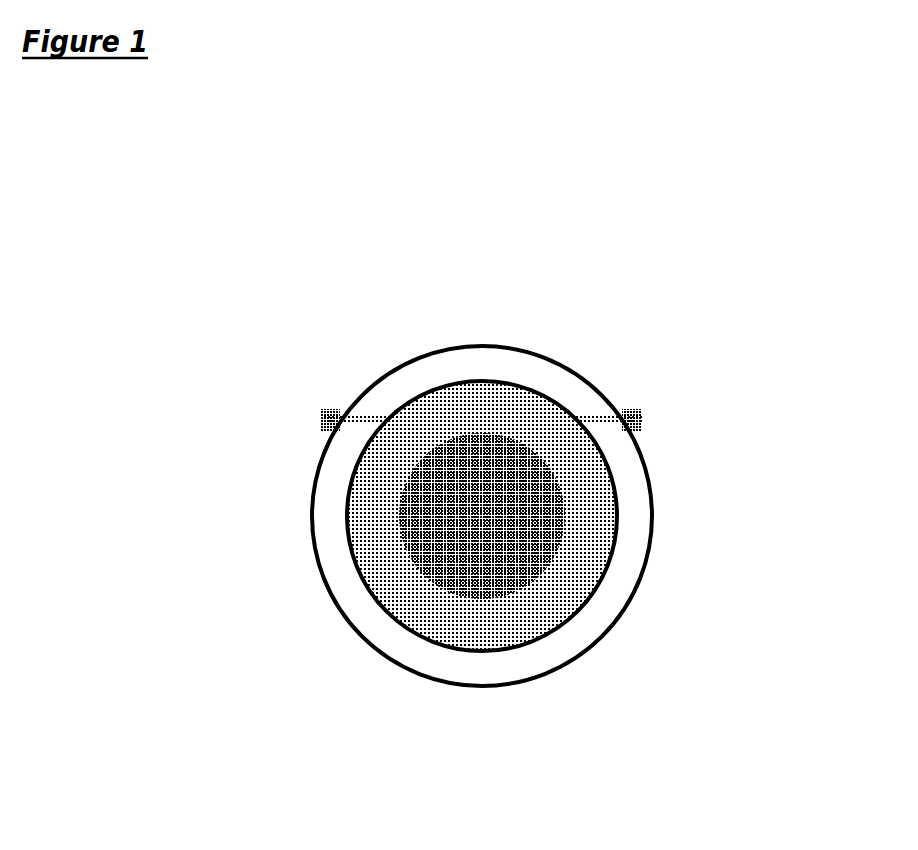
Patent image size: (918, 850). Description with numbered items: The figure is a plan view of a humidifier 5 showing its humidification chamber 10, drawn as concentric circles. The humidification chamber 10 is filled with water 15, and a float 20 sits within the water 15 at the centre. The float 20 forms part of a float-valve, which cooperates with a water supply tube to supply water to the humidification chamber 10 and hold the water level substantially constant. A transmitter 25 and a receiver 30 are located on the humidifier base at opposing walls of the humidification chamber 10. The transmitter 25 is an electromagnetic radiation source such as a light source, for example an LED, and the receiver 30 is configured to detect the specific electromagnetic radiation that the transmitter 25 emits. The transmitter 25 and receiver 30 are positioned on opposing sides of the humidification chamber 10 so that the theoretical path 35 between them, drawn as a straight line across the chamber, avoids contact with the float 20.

The humidifier 5 is at (557, 257).
The humidification chamber 10 is at (632, 557).
The water 15 is at (495, 637).
The float 20 is at (430, 563).
The transmitter 25 is at (324, 418).
The receiver 30 is at (641, 418).
The theoretical path 35 is at (427, 420).